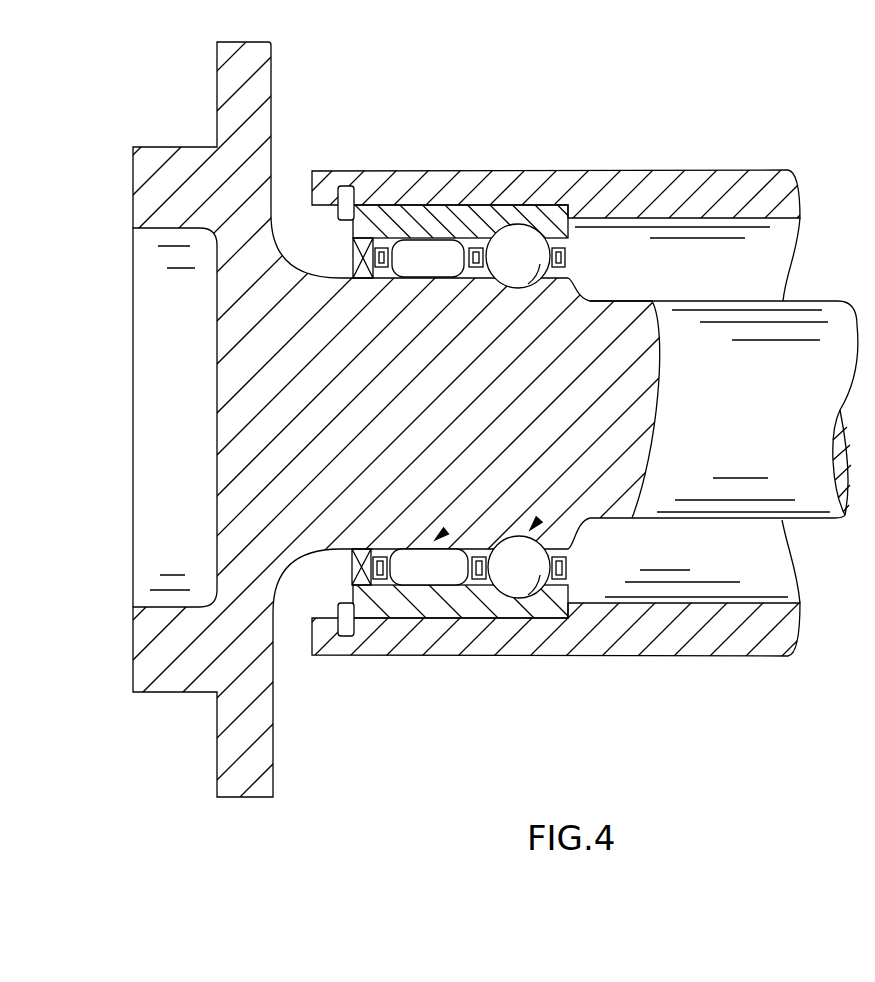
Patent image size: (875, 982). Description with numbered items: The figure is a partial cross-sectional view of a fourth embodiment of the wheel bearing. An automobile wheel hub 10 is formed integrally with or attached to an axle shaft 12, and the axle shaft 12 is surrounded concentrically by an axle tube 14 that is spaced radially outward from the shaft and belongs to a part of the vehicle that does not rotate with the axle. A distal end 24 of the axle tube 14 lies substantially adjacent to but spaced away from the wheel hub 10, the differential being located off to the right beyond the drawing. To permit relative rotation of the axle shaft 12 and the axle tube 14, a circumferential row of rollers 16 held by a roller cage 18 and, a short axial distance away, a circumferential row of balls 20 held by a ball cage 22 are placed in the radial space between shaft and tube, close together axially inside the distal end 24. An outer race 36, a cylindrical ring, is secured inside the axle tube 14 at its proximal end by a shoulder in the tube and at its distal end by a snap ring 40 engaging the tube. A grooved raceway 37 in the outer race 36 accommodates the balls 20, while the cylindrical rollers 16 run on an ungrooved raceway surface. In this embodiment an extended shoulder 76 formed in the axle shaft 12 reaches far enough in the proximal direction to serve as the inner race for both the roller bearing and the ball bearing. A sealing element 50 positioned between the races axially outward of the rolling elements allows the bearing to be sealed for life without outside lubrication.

The wheel hub 10 is at (437, 420).
The axle shaft 12 is at (240, 422).
The axle tube 14 is at (657, 633).
The rollers 16 is at (432, 243).
The roller cage 18 is at (382, 240).
The balls 20 is at (521, 231).
The ball cage 22 is at (569, 248).
The distal end 24 is at (313, 185).
The outer race 36 is at (447, 605).
The raceway 37 is at (519, 592).
The snap ring 40 is at (345, 638).
The sealing element 50 is at (358, 580).
The extended shoulder 76 is at (533, 527).